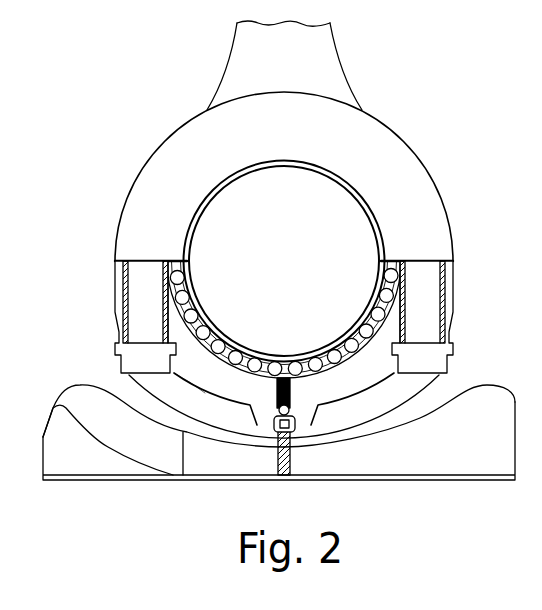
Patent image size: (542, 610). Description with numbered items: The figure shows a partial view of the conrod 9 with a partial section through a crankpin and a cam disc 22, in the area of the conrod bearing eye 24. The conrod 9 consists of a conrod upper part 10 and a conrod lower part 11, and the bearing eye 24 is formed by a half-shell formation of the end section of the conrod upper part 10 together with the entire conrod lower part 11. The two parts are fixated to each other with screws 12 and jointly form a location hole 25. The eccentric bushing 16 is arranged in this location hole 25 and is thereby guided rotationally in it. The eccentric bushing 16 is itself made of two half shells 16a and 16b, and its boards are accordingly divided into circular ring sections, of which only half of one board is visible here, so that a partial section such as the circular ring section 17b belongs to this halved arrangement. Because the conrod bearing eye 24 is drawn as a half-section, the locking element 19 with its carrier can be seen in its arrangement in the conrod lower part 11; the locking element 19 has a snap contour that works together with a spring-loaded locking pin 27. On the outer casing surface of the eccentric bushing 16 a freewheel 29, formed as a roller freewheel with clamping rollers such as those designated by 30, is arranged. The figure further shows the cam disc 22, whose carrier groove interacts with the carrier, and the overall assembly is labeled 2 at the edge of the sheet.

The conrod 9 is at (336, 38).
The conrod upper part 10 is at (325, 86).
The conrod lower part 11 is at (330, 382).
The screws 12 is at (133, 370).
The eccentric bushing 16 is at (383, 265).
The half shell 16a is at (222, 183).
The half shell 16b is at (185, 262).
The circular ring section 17b is at (413, 404).
The locking element 19 is at (278, 412).
The assembly 2 is at (538, 248).
The cam disc 22 is at (447, 449).
The conrod bearing eye 24 is at (452, 224).
The location hole 25 is at (327, 170).
The locking pin 27 is at (298, 428).
The freewheel 29 is at (205, 343).
The outer race 30 is at (388, 309).